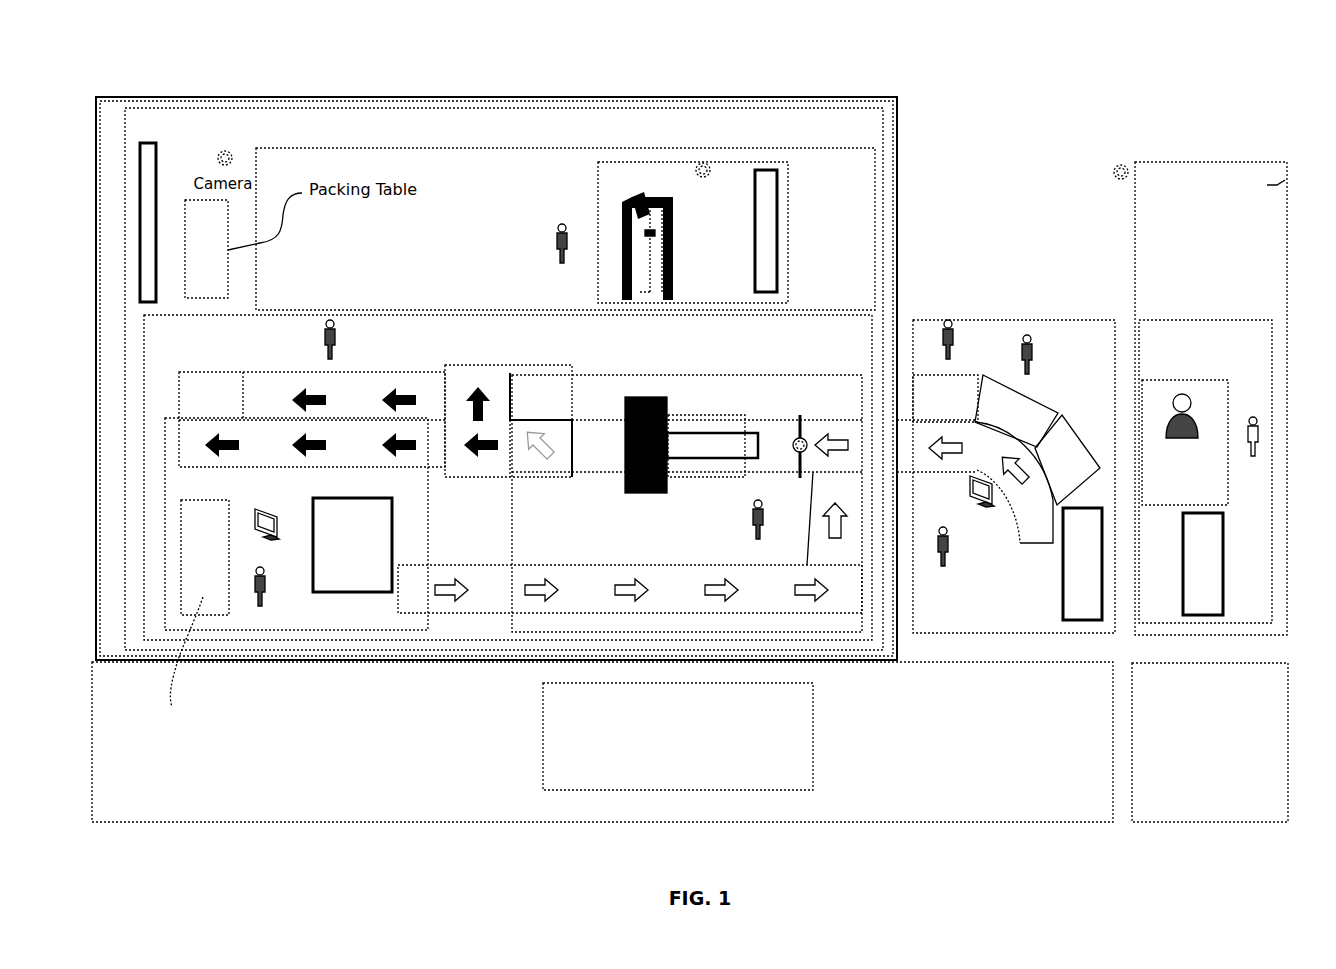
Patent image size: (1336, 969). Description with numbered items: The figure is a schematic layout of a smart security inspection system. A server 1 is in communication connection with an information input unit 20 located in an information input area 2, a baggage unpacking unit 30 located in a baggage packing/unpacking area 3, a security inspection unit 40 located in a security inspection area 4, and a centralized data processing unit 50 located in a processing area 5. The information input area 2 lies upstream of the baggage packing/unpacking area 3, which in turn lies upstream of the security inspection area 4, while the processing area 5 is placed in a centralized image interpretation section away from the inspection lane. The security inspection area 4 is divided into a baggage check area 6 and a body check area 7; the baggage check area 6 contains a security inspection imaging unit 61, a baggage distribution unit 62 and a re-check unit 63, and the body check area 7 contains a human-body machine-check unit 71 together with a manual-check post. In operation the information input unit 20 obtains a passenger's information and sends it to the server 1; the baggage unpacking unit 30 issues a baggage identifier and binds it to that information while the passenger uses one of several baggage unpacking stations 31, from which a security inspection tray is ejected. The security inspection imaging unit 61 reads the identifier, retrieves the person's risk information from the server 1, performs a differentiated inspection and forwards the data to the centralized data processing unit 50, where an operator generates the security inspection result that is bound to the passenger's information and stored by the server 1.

The server 1 is at (1180, 808).
The information input area 2 is at (1188, 391).
The baggage packing/unpacking area 3 is at (968, 513).
The security inspection area 4 is at (108, 113).
The processing area 5 is at (347, 778).
The baggage check area 6 is at (590, 548).
The body check area 7 is at (457, 231).
The information input unit 20 is at (1203, 590).
The baggage unpacking unit 30 is at (1077, 587).
The baggage unpacking station 31 is at (1050, 413).
The security inspection unit 40 is at (148, 152).
The centralized data processing unit 50 is at (628, 782).
The security inspection imaging unit 61 is at (680, 433).
The baggage distribution unit 62 is at (538, 375).
The re-check unit 63 is at (370, 510).
The human-body machine-check unit 71 is at (777, 246).